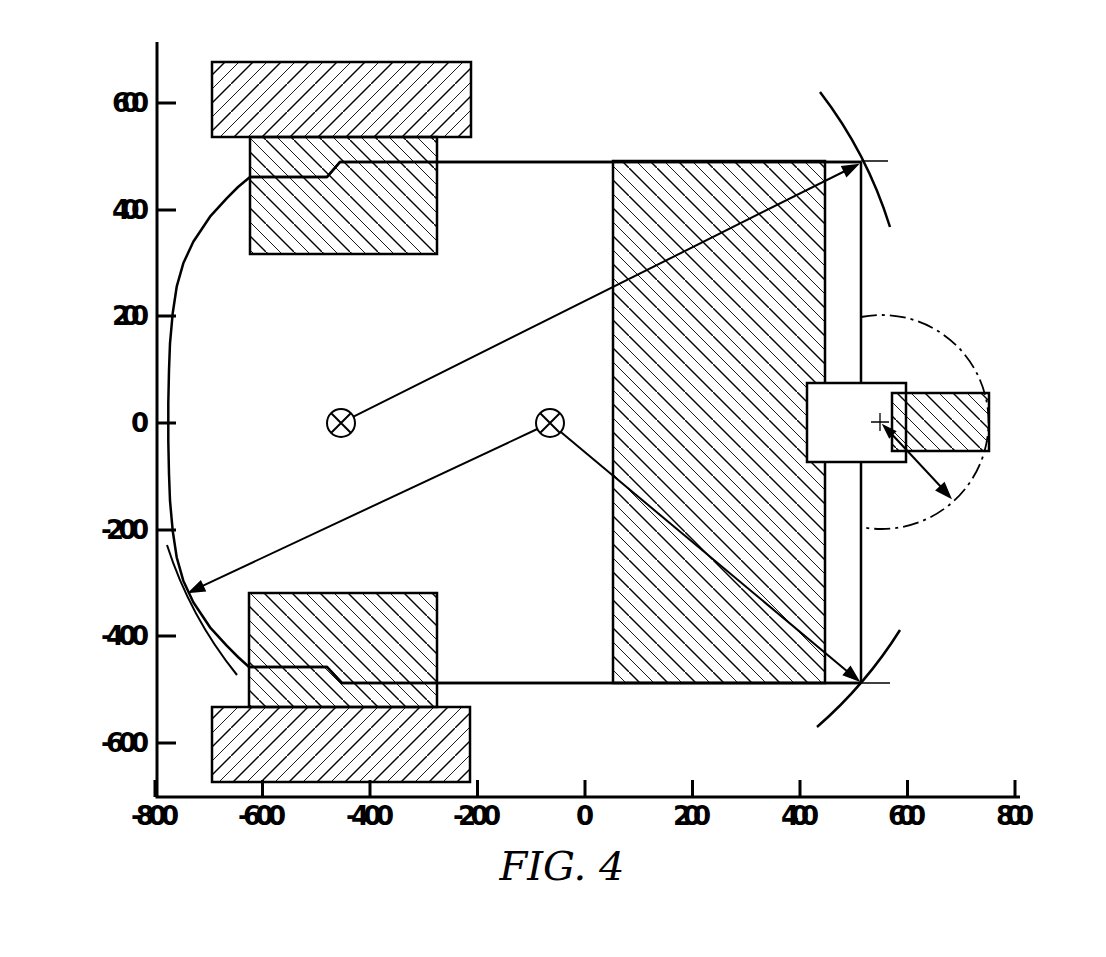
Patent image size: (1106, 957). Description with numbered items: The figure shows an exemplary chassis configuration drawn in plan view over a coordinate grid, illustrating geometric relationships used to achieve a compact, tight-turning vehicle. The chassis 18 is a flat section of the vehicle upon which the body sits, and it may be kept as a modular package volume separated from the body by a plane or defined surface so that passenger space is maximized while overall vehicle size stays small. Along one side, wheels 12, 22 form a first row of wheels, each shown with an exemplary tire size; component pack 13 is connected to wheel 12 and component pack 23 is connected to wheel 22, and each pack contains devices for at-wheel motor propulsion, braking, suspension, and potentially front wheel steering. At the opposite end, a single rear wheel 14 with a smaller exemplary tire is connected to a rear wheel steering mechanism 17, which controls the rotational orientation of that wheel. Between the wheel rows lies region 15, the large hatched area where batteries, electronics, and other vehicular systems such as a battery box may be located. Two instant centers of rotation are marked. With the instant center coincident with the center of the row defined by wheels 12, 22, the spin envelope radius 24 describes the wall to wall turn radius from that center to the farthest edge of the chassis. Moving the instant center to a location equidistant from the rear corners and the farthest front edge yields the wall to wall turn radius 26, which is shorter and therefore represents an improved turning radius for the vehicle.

The wheel 12 is at (453, 743).
The component pack 13 is at (427, 648).
The wheel 14 is at (989, 418).
The region 15 is at (700, 665).
The rear wheel steering mechanism 17 is at (870, 393).
The chassis 18 is at (578, 162).
The wheel 22 is at (455, 102).
The component pack 23 is at (432, 192).
The spin envelope radius 24 is at (875, 187).
The wall to wall turn radius 26 is at (883, 657).